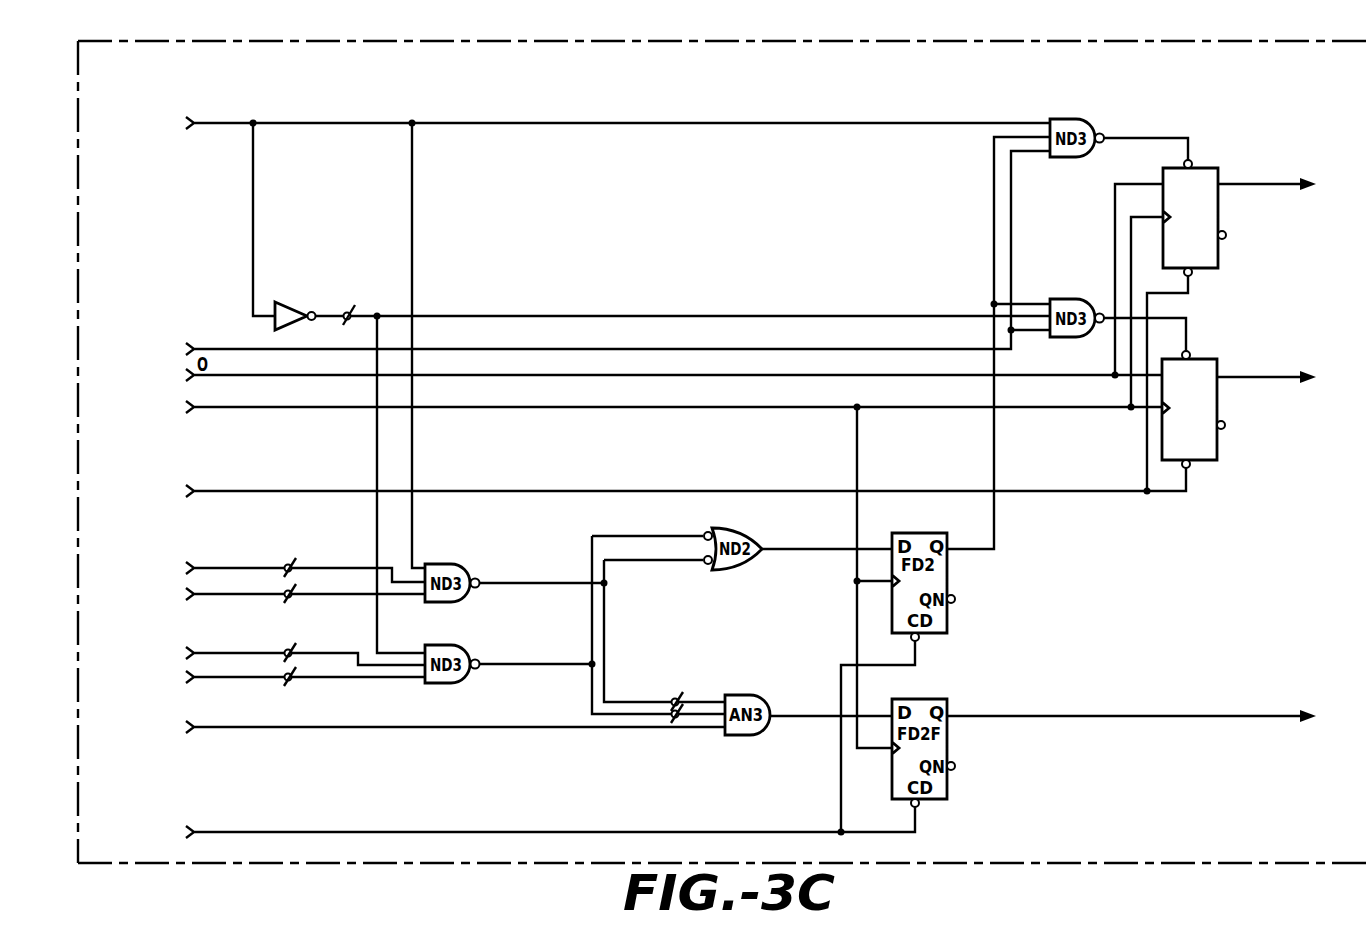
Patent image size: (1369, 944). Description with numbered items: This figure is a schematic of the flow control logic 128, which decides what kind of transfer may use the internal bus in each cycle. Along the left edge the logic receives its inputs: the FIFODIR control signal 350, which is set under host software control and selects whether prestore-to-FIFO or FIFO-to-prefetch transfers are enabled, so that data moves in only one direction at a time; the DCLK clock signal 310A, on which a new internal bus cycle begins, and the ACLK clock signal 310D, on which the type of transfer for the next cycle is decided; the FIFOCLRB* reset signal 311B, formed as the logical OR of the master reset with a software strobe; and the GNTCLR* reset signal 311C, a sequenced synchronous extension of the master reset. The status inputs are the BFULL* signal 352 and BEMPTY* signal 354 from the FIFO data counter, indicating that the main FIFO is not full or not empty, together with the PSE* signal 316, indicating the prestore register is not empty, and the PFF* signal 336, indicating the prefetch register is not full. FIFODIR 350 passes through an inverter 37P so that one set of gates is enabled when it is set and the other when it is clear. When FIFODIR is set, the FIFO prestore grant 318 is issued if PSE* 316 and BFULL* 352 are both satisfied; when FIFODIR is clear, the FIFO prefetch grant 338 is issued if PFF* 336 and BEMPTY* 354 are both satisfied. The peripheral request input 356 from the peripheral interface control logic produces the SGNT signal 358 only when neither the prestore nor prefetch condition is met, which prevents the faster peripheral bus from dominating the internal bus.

The flow control logic 128 is at (723, 452).
The FIFODIR control signal 350 is at (601, 335).
The inverter 37P is at (662, 460).
The DCLK clock signal 310A is at (596, 255).
The ACLK clock signal 310D is at (653, 482).
The FIFOCLRB* reset signal 311B is at (665, 389).
The BFULL* signal 352 is at (289, 564).
The PSE* signal 316 is at (289, 588).
The BEMPTY* signal 354 is at (289, 648).
The PFF* signal 336 is at (289, 671).
The SRO input 356 is at (439, 721).
The GNTCLR* reset signal 311C is at (529, 825).
The FIFO prestore grant 318 is at (1258, 217).
The FIFO prefetch grant 338 is at (1257, 409).
The SGNT signal 358 is at (1148, 708).